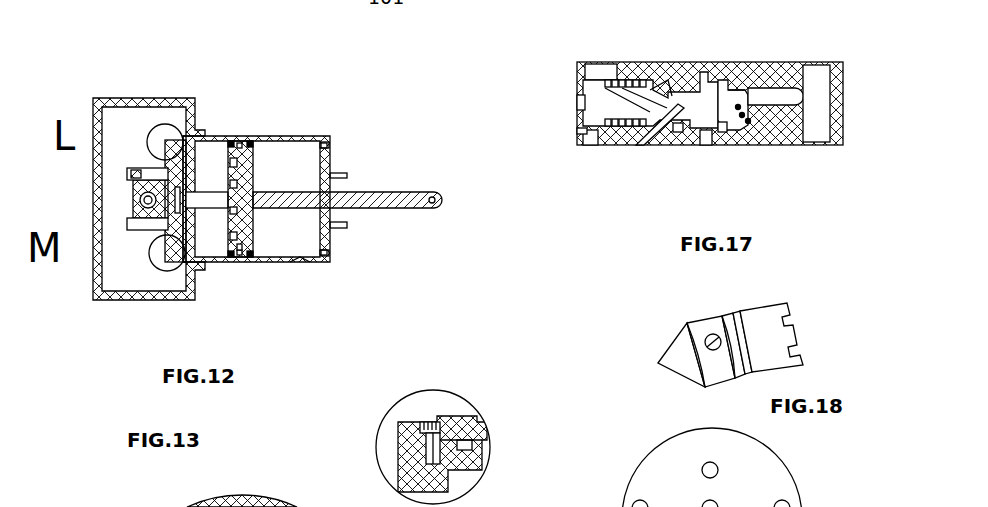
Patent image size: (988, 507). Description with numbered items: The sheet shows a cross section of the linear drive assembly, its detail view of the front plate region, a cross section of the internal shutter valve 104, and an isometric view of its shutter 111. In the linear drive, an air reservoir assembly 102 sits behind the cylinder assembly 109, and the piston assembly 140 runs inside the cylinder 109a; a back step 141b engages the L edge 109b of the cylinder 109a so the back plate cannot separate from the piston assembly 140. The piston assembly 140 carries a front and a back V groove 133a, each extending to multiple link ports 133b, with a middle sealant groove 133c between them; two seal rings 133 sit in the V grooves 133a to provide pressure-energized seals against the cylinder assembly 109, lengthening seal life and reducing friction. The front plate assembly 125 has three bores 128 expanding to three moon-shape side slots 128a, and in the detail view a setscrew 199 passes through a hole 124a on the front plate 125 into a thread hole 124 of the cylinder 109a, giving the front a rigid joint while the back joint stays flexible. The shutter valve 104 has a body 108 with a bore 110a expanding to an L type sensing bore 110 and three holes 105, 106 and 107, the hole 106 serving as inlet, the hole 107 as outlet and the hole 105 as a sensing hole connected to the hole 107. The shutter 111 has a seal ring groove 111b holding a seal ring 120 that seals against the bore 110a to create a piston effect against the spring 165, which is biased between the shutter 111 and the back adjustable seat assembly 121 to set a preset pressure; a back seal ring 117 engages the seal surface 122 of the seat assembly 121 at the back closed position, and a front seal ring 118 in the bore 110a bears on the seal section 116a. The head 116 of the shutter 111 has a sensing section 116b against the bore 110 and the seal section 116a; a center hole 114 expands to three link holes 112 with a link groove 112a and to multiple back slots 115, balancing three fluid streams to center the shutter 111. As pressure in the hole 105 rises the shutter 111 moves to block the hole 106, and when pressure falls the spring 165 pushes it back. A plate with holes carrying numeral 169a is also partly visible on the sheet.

In FIG. 12, the air reservoir assembly 102 is at (90, 110).
In FIG. 12, the internal shutter valve 104 is at (146, 214).
In FIG. 12, the front plate assembly 125 is at (165, 137).
In FIG. 15, the front plate assembly 125 is at (410, 458).
In FIG. 12, the V groove 133a is at (251, 141).
In FIG. 12, the link port 133b is at (230, 146).
In FIG. 12, the seal ring 133 is at (228, 268).
In FIG. 12, the middle sealant groove 133c is at (239, 262).
In FIG. 12, the cylinder assembly 109 is at (302, 136).
In FIG. 12, the piston assembly 140 is at (262, 172).
In FIG. 12, the L edge 109b is at (324, 258).
In FIG. 12, the back step 141b is at (327, 262).
In FIG. 12, the cylinder 109a is at (306, 266).
In FIG. 15, the cylinder 109a is at (466, 426).
In FIG. 17, the body 108 is at (805, 66).
In FIG. 17, the hole 106 is at (610, 72).
In FIG. 17, the back adjustable seat assembly 121 is at (616, 110).
In FIG. 17, the bore 110a is at (583, 80).
In FIG. 17, the spring 165 is at (596, 128).
In FIG. 17, the seal surface 122 is at (658, 98).
In FIG. 17, the shutter 111 is at (691, 80).
In FIG. 18, the shutter 111 is at (657, 338).
In FIG. 17, the front seal ring 118 is at (732, 77).
In FIG. 17, the L type sensing bore 110 is at (773, 97).
In FIG. 17, the hole 105 is at (820, 118).
In FIG. 17, the sensing section 116b is at (740, 108).
In FIG. 17, the head 116 is at (744, 116).
In FIG. 17, the seal section 116a is at (750, 122).
In FIG. 17, the back seal ring 117 is at (655, 120).
In FIG. 17, the center hole 114 is at (680, 108).
In FIG. 17, the seal ring 120 is at (680, 133).
In FIG. 17, the hole 107 is at (708, 142).
In FIG. 17, the link holes 112 is at (723, 122).
In FIG. 18, the link groove 112a is at (713, 323).
In FIG. 18, the seal ring groove 111b is at (745, 370).
In FIG. 18, the back slots 115 is at (787, 317).
In FIG. 15, the hole 124a is at (423, 431).
In FIG. 15, the thread hole 124 is at (438, 464).
In FIG. 15, the setscrew 199 is at (435, 443).
In FIG. 13, the moon-shape side slots 128a is at (240, 506).
In FIG. 13, the bores 128 is at (61, 502).
In FIG. 16, the plate 169a is at (754, 490).